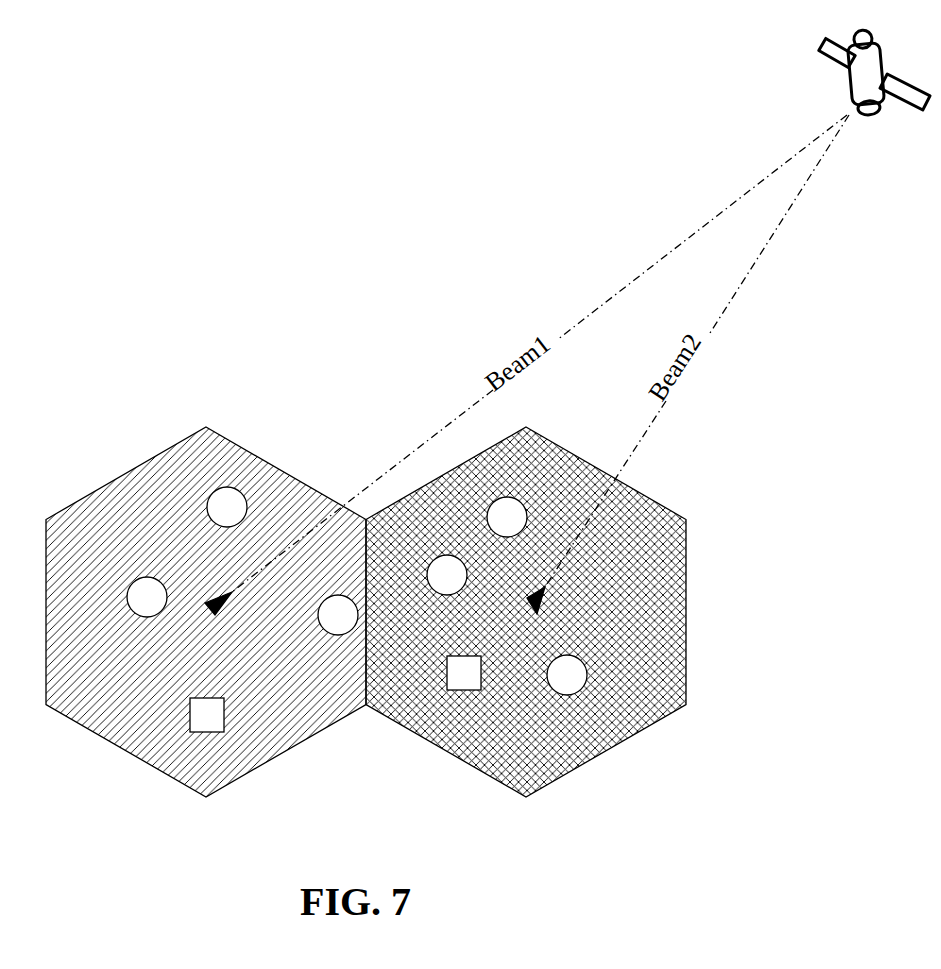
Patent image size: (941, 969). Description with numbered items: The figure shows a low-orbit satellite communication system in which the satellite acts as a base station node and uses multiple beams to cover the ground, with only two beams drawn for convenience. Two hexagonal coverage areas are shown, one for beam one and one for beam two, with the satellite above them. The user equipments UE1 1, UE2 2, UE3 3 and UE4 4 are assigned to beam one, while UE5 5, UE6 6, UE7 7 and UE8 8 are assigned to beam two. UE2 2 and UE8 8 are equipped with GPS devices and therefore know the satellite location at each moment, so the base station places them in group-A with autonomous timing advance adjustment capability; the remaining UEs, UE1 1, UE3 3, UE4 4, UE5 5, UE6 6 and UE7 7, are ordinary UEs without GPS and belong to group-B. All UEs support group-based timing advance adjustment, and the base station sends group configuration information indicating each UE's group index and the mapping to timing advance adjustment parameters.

The UE1 1 is at (147, 597).
The UE2 2 is at (207, 715).
The UE3 3 is at (227, 507).
The UE4 4 is at (338, 615).
The UE5 5 is at (447, 575).
The UE6 6 is at (507, 517).
The UE7 7 is at (567, 675).
The UE8 8 is at (464, 673).